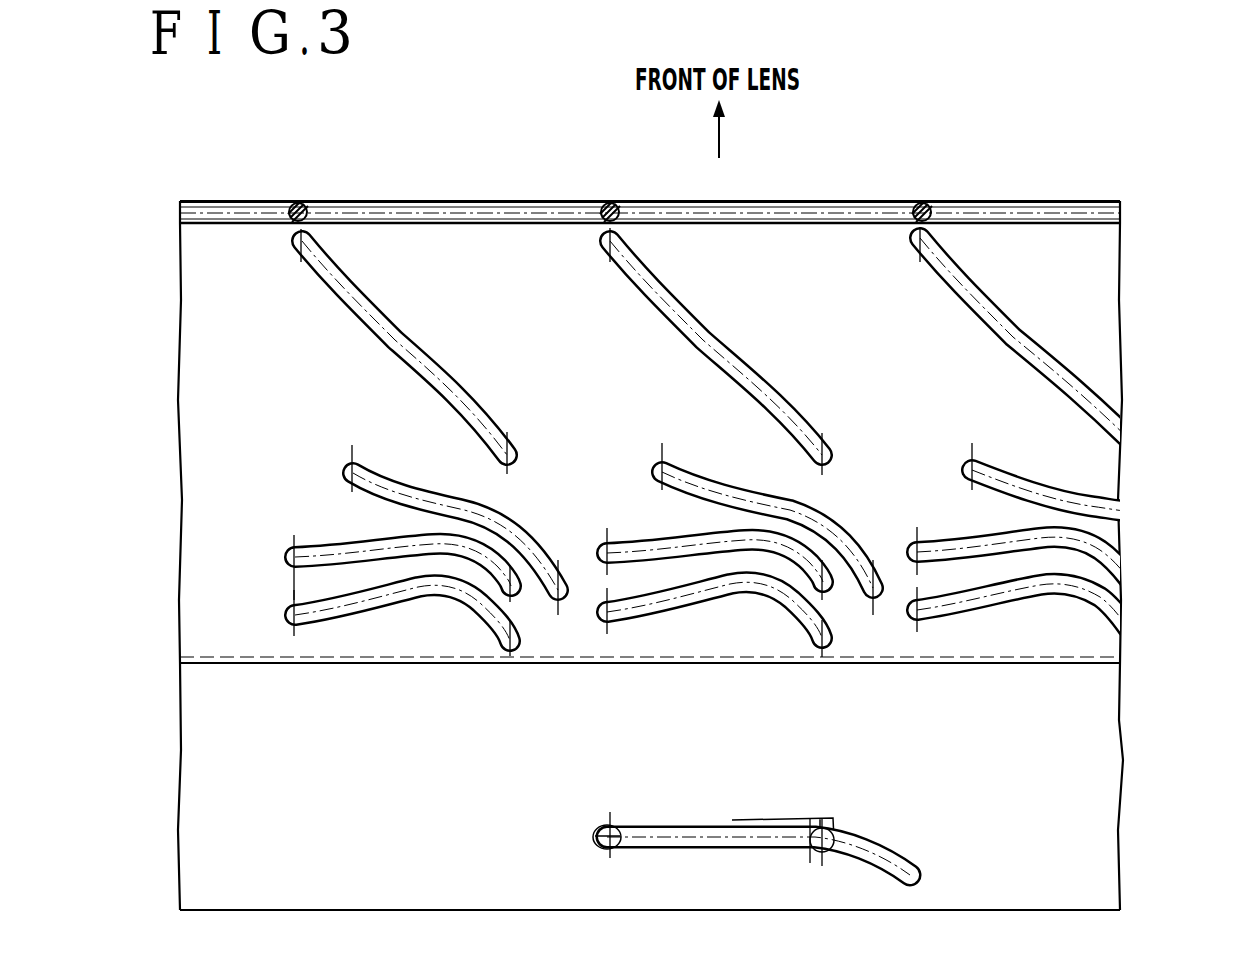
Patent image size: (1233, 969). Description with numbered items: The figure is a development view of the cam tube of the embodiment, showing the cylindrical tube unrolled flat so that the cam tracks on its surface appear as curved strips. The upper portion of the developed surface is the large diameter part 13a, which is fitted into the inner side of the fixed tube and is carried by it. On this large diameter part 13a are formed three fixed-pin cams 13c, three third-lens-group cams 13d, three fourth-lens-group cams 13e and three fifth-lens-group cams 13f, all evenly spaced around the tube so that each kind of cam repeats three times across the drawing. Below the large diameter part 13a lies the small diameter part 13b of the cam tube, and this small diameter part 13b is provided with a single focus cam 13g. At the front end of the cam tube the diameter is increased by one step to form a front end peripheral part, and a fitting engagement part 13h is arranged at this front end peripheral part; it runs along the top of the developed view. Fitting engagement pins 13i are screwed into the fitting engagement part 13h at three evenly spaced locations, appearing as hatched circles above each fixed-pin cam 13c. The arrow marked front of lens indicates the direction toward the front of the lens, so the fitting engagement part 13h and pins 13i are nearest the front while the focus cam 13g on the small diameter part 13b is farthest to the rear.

The large diameter part 13a is at (843, 250).
The small diameter part 13b is at (1068, 805).
The fixed-pin cams 13c is at (417, 343).
The third-lens-group cams 13d is at (332, 540).
The fourth-lens-group cams 13e is at (520, 522).
The fifth-lens-group cams 13f is at (452, 607).
The focus cam 13g is at (737, 820).
The fitting engagement part 13h is at (500, 203).
The fitting engagement pins 13i is at (294, 203).